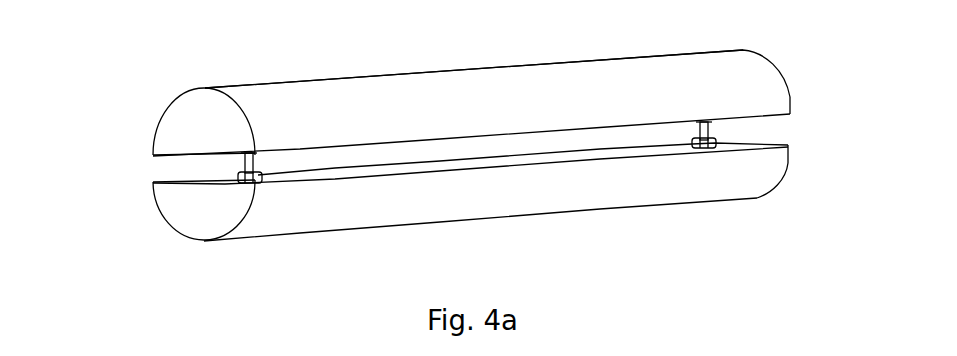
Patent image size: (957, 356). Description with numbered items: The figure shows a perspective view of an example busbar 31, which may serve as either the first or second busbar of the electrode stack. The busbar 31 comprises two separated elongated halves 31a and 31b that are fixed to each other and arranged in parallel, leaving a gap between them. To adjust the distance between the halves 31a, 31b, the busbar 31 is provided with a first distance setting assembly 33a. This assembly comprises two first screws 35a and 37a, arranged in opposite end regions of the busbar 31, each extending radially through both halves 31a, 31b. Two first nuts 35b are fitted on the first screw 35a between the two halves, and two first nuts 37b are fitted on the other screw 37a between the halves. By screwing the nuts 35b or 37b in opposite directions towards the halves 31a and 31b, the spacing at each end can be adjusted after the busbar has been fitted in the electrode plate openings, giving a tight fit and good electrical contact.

The first busbar 31 is at (601, 48).
The elongated half 31a is at (770, 191).
The elongated half 31b is at (790, 74).
The first distance setting assembly 33a is at (158, 173).
The first screw 35a is at (258, 175).
The first nut 35b is at (240, 155).
The first screw 37a is at (693, 145).
The first nut 37b is at (701, 148).